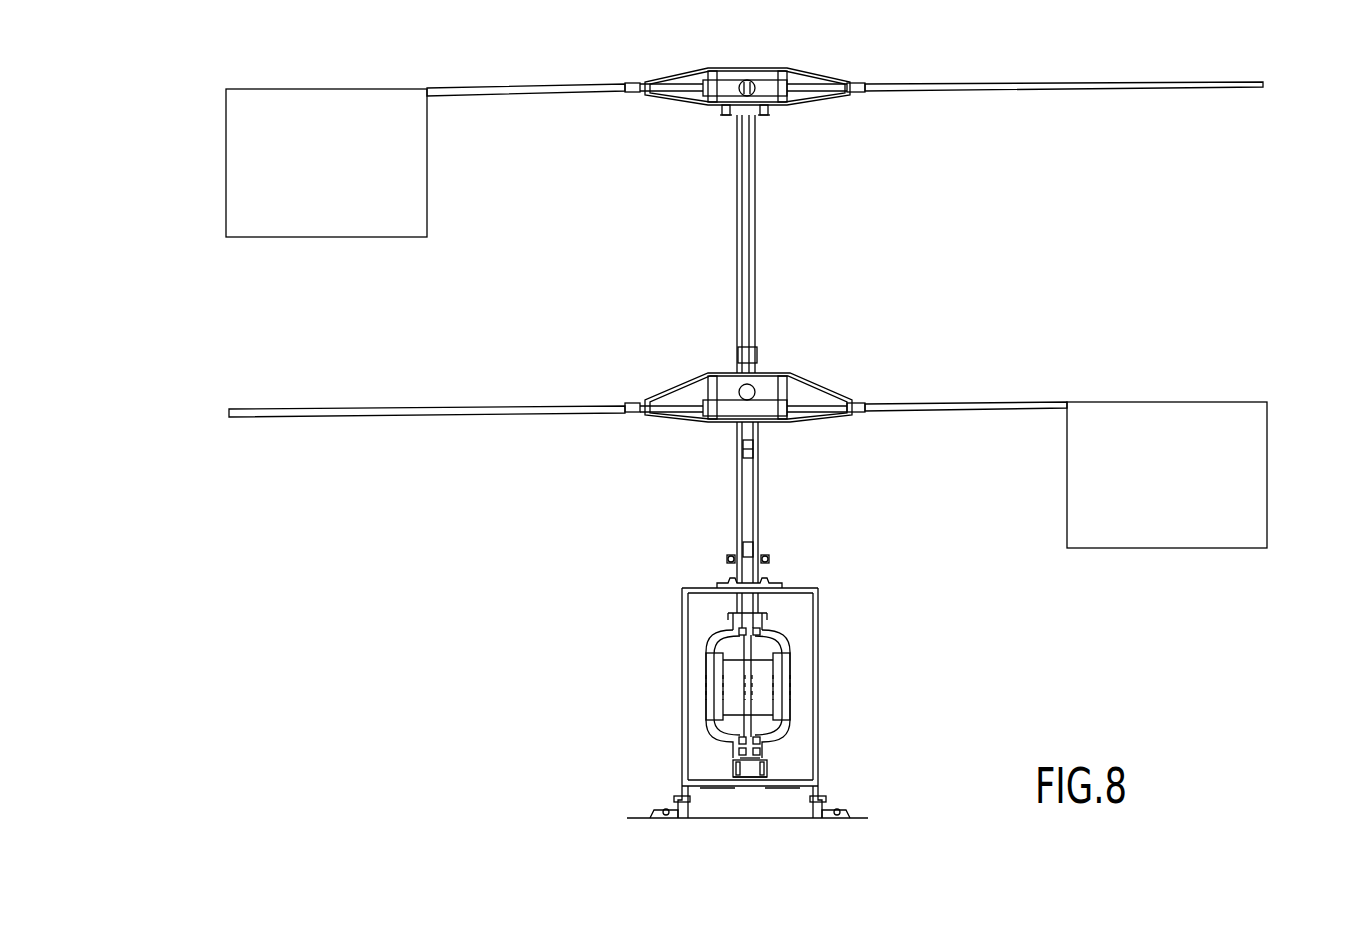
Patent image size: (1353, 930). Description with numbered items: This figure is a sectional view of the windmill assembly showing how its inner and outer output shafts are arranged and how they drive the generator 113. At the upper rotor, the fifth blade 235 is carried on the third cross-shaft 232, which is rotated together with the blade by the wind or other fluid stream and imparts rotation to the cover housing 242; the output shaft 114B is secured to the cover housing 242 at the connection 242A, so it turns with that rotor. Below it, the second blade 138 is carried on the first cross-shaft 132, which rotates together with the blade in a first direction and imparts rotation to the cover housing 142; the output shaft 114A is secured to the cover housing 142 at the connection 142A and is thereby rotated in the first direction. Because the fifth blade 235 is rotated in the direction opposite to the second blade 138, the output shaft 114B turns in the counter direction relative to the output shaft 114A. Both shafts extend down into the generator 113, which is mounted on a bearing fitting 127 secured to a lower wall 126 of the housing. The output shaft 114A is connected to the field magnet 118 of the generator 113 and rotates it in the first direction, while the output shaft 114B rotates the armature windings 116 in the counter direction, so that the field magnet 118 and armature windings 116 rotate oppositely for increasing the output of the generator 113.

The generator 113 is at (815, 683).
The output shaft 114A is at (759, 504).
The output shaft 114B is at (756, 281).
The armature windings 116 is at (790, 641).
The field magnet 118 is at (706, 698).
The lower wall 126 is at (752, 780).
The bearing fitting 127 is at (770, 762).
The first cross-shaft 132 is at (975, 402).
The second blade 138 is at (1163, 548).
The cover housing 142 is at (710, 375).
The connection 142A is at (758, 430).
The third cross-shaft 232 is at (990, 92).
The fifth blade 235 is at (340, 237).
The cover housing 242 is at (770, 68).
The connection 242A is at (768, 115).